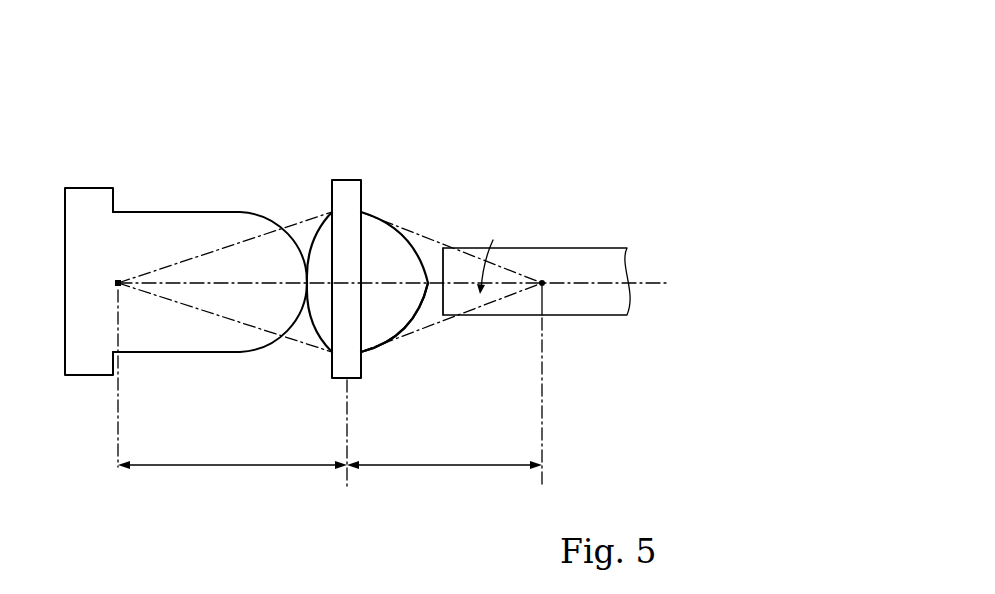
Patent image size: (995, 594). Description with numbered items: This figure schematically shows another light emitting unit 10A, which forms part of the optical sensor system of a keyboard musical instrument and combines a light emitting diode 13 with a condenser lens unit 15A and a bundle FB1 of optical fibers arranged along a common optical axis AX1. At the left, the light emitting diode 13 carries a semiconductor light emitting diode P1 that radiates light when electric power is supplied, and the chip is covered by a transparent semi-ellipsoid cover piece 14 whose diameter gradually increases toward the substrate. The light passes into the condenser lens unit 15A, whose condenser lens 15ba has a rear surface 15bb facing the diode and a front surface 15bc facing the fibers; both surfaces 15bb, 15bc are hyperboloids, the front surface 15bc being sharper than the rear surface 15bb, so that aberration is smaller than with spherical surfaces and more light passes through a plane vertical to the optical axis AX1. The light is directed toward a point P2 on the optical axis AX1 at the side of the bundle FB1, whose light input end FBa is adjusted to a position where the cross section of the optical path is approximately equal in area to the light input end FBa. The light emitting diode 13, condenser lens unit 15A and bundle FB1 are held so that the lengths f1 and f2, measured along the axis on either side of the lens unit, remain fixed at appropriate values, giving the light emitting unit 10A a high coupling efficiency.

The light emitting diode 13 is at (90, 182).
The semi-ellipsoid cover piece 14 is at (178, 212).
The semiconductor light emitting diode P1 is at (119, 278).
The optical axis AX1 is at (322, 283).
The light emitting unit 10A is at (538, 100).
The condenser lens unit 15A is at (340, 153).
The rear surface 15bb is at (314, 322).
The condenser lens 15ba is at (410, 234).
The front surface 15bc is at (397, 330).
The bundle of optical fibers FB1 is at (508, 248).
The light input end FBa is at (443, 303).
The second focal point P2 is at (543, 281).
The length f1 is at (232, 389).
The length f2 is at (444, 403).